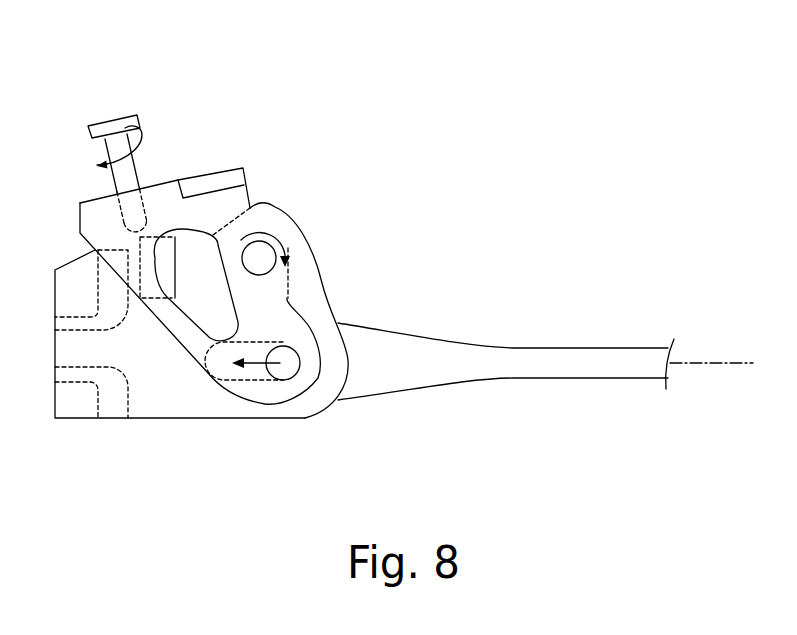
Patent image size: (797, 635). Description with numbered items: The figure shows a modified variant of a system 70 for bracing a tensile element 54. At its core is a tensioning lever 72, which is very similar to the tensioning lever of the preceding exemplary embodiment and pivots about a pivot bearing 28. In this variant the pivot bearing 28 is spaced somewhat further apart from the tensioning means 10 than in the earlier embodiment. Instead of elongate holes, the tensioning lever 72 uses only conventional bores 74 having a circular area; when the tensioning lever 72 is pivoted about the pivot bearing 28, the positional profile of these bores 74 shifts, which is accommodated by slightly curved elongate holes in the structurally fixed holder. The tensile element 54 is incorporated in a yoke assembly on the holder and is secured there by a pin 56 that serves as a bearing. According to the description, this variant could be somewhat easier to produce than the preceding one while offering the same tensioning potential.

The tensioning means 10 is at (128, 172).
The pivot bearing 28 is at (282, 233).
The tensile element 54 is at (600, 357).
The pin 56 is at (290, 373).
The system 70 is at (288, 135).
The tensioning lever 72 is at (280, 313).
The bores 74 is at (262, 387).